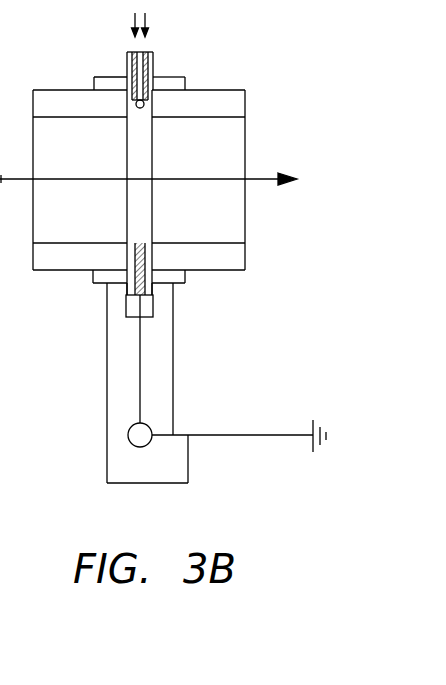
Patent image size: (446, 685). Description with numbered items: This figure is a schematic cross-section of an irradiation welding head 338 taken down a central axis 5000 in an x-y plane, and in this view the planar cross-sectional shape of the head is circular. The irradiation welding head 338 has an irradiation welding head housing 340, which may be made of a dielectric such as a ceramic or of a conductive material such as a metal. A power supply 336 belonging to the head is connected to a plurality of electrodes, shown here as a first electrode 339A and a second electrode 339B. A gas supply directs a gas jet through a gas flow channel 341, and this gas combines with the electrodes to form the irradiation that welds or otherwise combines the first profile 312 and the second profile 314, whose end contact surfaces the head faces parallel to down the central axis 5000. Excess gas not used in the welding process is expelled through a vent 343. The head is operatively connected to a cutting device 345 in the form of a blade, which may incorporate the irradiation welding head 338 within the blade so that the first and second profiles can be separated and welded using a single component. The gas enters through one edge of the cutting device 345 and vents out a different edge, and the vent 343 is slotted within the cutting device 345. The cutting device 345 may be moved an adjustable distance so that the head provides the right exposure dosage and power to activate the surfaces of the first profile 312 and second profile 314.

The first profile 312 is at (155, 268).
The second profile 314 is at (127, 264).
The power supply 336 is at (130, 435).
The irradiation welding head 338 is at (144, 104).
The first electrode 339A is at (185, 78).
The second electrode 339B is at (142, 99).
The irradiation welding head housing 340 is at (153, 308).
The gas flow channel 341 is at (130, 72).
The vent 343 is at (153, 288).
The cutting device 345 is at (155, 312).
The central axis 5000 is at (267, 179).